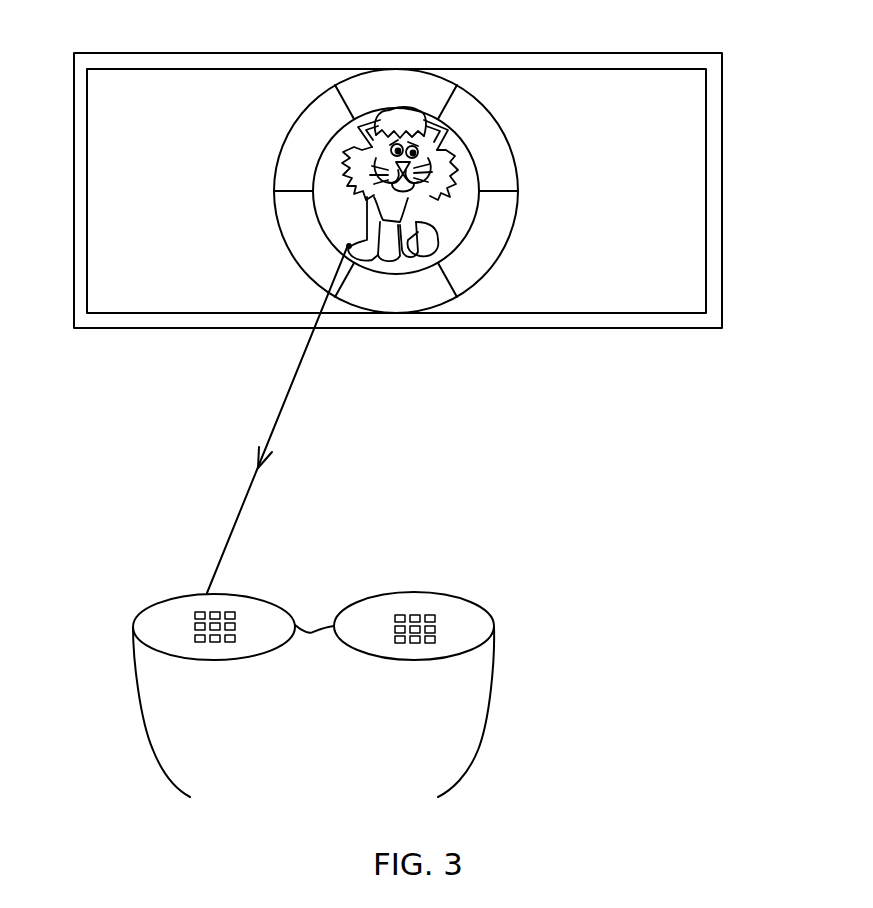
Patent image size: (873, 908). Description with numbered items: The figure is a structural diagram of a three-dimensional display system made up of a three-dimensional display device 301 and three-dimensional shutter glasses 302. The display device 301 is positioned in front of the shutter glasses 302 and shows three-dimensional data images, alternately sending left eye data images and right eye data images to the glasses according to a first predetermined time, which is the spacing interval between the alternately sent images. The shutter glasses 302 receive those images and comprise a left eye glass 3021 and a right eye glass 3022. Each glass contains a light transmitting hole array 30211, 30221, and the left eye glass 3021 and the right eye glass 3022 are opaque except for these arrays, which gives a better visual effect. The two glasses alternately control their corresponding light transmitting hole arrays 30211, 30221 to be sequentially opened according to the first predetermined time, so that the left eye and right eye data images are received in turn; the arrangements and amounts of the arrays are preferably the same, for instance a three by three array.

The 3D display device 301 is at (723, 203).
The 3D shutter glasses 302 is at (325, 681).
The left eye glass 3021 is at (163, 641).
The right eye glass 3022 is at (444, 634).
The light transmitting hole array 30211 is at (227, 642).
The light transmitting hole array 30221 is at (410, 643).